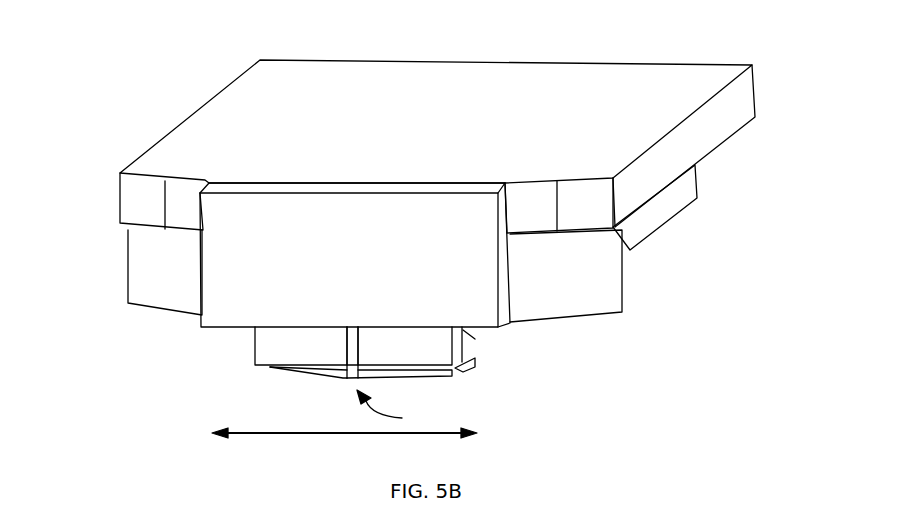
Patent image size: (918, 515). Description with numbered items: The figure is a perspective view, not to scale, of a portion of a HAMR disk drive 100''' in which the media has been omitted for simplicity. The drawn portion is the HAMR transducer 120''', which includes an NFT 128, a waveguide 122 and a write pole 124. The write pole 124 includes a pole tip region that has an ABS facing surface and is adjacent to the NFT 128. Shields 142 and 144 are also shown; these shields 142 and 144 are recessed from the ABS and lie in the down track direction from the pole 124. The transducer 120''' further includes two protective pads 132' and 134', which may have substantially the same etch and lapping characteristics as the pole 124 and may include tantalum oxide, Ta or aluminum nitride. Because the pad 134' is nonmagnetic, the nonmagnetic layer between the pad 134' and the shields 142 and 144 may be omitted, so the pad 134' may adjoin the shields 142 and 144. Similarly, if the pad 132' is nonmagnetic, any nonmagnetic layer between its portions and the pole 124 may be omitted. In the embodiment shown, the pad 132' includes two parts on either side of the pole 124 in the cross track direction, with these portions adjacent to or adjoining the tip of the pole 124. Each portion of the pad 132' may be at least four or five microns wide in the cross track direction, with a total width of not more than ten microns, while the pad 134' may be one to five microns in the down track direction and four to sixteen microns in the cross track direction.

The HAMR disk drive 100''' is at (418, 237).
The HAMR transducer 120''' is at (418, 245).
The shield 144 is at (678, 63).
The shield 142 is at (128, 270).
The protective pad 134' is at (328, 203).
The waveguide 122 is at (278, 371).
The write pole 124 is at (362, 352).
The NFT 128 is at (353, 380).
The protective pad 132' is at (353, 365).